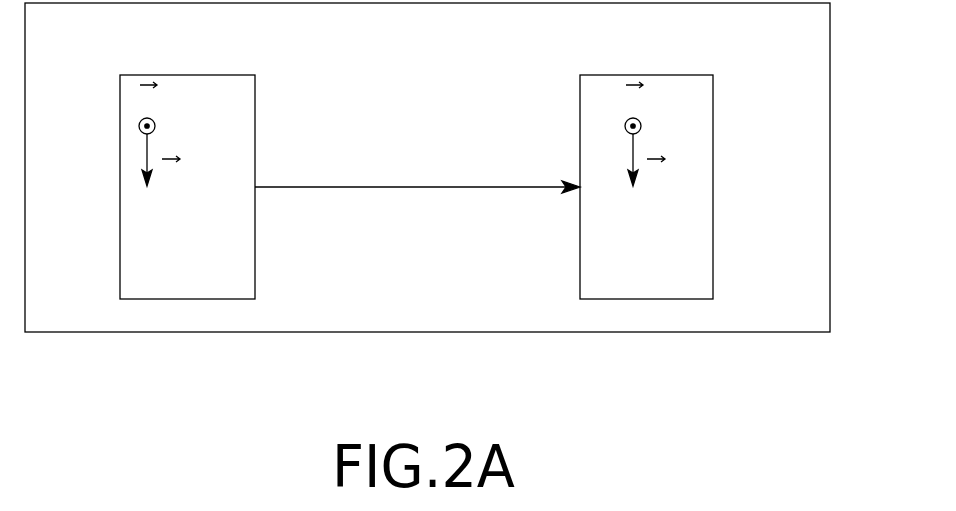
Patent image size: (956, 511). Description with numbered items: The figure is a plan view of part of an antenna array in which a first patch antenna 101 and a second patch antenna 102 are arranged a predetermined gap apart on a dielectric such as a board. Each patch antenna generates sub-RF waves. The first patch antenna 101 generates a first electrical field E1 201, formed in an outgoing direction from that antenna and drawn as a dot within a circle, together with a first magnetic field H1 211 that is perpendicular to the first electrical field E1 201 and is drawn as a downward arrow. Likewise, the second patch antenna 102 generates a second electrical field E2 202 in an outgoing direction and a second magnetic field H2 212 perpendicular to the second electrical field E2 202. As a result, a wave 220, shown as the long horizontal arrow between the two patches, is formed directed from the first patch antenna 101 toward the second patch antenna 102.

The first patch antenna 101 is at (186, 75).
The second patch antenna 102 is at (645, 75).
The first electrical field E1 201 is at (139, 126).
The first magnetic field H1 211 is at (147, 160).
The second electrical field E2 202 is at (641, 125).
The second magnetic field H2 212 is at (635, 151).
The wave 220 is at (409, 186).